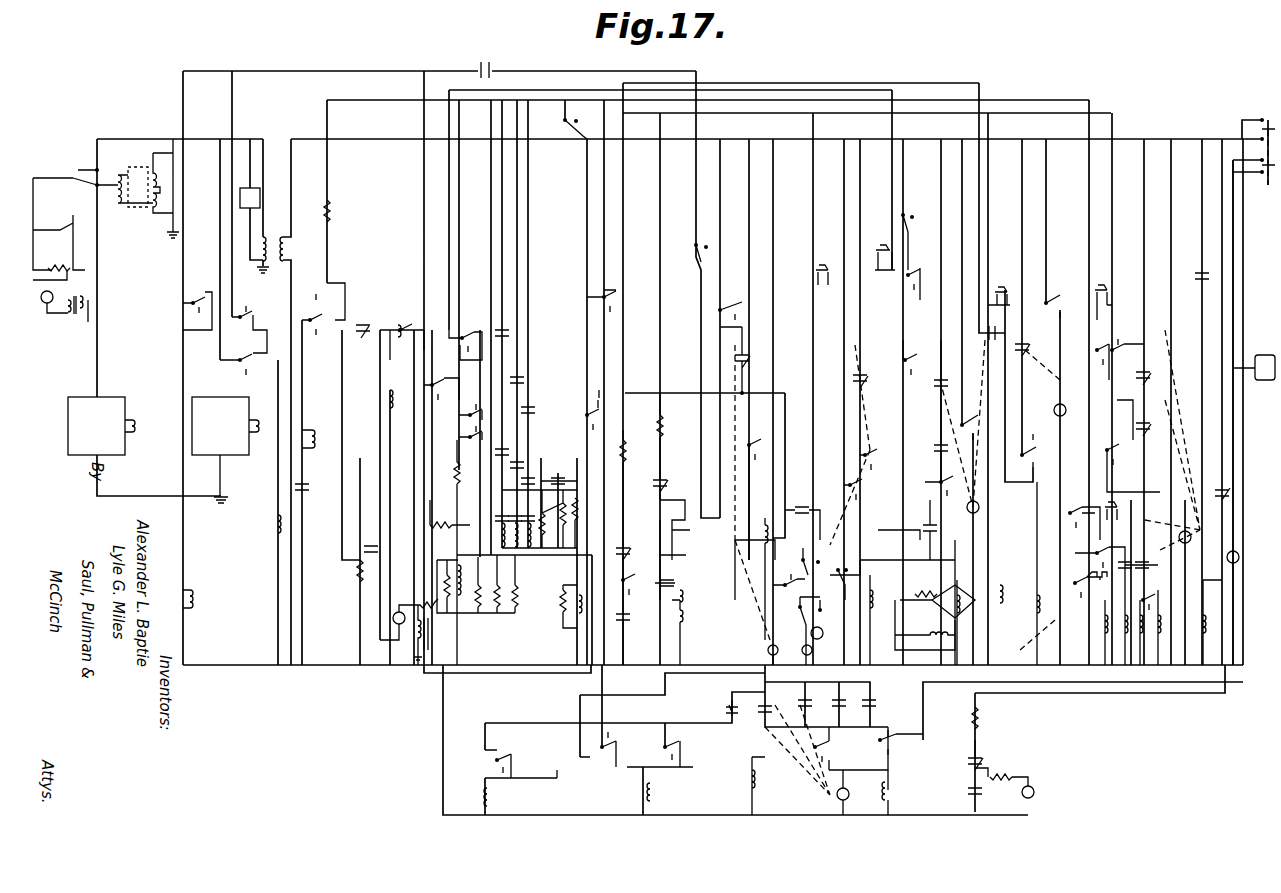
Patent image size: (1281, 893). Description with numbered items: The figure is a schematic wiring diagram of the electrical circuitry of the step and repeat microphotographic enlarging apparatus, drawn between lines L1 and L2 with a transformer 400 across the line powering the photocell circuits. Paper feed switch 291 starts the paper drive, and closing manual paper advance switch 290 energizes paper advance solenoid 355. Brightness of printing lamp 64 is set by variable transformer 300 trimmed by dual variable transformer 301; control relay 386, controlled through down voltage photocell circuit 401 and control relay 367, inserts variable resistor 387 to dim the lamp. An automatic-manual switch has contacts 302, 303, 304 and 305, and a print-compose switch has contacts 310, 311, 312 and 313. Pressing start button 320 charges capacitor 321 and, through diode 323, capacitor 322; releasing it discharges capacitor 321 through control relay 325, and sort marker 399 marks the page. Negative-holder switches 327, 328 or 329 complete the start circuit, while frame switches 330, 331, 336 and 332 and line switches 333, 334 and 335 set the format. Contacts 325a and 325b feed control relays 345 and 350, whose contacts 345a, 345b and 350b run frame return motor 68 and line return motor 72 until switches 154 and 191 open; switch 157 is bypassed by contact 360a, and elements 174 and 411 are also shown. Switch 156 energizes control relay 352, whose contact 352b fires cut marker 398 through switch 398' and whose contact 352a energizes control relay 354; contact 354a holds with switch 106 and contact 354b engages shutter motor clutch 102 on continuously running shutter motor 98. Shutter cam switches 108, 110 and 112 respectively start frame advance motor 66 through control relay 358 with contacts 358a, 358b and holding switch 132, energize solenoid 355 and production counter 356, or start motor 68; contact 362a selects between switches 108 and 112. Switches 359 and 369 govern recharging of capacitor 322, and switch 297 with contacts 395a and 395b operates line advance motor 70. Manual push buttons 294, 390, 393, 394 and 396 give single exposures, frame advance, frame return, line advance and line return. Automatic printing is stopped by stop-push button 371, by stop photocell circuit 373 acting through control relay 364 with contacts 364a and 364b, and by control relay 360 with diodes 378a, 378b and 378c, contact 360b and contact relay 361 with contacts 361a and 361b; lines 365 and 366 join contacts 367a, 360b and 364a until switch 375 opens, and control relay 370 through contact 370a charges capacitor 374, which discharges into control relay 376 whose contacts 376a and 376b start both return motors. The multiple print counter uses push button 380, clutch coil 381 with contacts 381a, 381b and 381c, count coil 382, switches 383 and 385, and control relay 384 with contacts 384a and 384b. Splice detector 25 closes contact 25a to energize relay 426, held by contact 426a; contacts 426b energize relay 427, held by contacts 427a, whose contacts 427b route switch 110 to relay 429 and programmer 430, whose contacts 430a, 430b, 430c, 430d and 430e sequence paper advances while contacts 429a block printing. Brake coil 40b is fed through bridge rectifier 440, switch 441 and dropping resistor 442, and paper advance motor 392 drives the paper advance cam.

The variable transformer 300 is at (110, 185).
The dual variable transformer 301 is at (143, 170).
The print-compose switch contact 313 is at (59, 229).
The variable resistor 387 is at (74, 283).
The printing lamp 64 is at (53, 297).
The contact 367a is at (196, 308).
The line 365 is at (183, 262).
The line 366 is at (233, 282).
The contact 361b is at (255, 317).
The contact 364a is at (243, 370).
The transformer 400 is at (275, 240).
The contact 370a is at (308, 305).
The contact 384b is at (412, 325).
The start button 320 is at (360, 333).
The normally closed contact 325a is at (462, 334).
The switch 327 is at (505, 330).
The contact 360b is at (600, 295).
The automatic-manual switch contact 302 is at (575, 137).
The switch 375 is at (480, 65).
The control relay 376 is at (319, 426).
The capacitor 374 is at (300, 483).
The capacitor 321 is at (364, 540).
The diode 323 is at (357, 575).
The control relay 325 is at (395, 400).
The sort marker 399 is at (390, 612).
The contact 364b is at (432, 380).
The contact 360a is at (468, 417).
The stop-push button 371 is at (468, 440).
The diode 378a is at (447, 470).
The diode 378b is at (663, 414).
The switch 328 is at (522, 380).
The switch 329 is at (530, 410).
The switch 330 is at (505, 450).
The switch 331 is at (522, 465).
The switch 332 is at (535, 480).
The switch 336 is at (556, 483).
The contact 352b is at (587, 417).
The switch 333 is at (506, 548).
The switch 334 is at (518, 548).
The switch 335 is at (531, 546).
The control relay 360 is at (462, 612).
The resistor 378c is at (641, 450).
The manual exposure push button 294 is at (666, 480).
The switch 359 is at (626, 545).
The switch 156 is at (672, 550).
The automatic-manual switch contact 303 is at (640, 586).
The switch 369 is at (657, 594).
The capacitor 322 is at (630, 617).
The contact relay 361 is at (623, 634).
The control relay 352 is at (683, 600).
The contact 354b is at (780, 580).
The control relay 354 is at (762, 538).
The contact 354a is at (754, 499).
The switch 106 is at (742, 352).
The automatic-manual switch contact 304 is at (696, 260).
The contact 352a is at (725, 305).
The push button 390 is at (822, 280).
The push button 393 is at (876, 272).
The automatic-manual switch contact 305 is at (915, 234).
The contact 361a is at (917, 288).
The contact 376b is at (907, 355).
The switch 132 is at (862, 370).
The contact 358b is at (870, 452).
The contact 358a is at (849, 493).
The switch 157 is at (946, 378).
The switch 154 is at (930, 445).
The contact 345a is at (932, 488).
The switch 297 is at (988, 336).
The contact 345b is at (978, 410).
The frame return motor 68 is at (979, 510).
The push button 394 is at (1000, 288).
The contact 395b is at (1058, 292).
The rectifier 174 is at (1036, 340).
The line advance motor 70 is at (1053, 412).
The contact 395a is at (1013, 467).
The contacts 381c is at (1072, 516).
The contact 381a is at (1097, 553).
The contact 381b is at (1075, 586).
The bridge rectifier 440 is at (960, 592).
The control relay 358 is at (962, 615).
The control relay 345 is at (1034, 620).
The contact 325b is at (1107, 455).
The multiple print counter push button 380 is at (1116, 504).
The count coil 382 is at (1105, 612).
The clutch coil 381 is at (1123, 633).
The control relay 384 is at (1126, 663).
The switch 383 is at (1142, 568).
The switch 385 is at (1150, 580).
The contact 384a is at (1164, 601).
The control relay 350 is at (1200, 635).
The production counter 356 is at (1197, 663).
The line return motor 72 is at (1195, 531).
The rectifier 411 is at (1148, 425).
The switch 191 is at (1146, 376).
The contact 350b is at (1149, 344).
The push button 396 is at (1113, 305).
The contact 376a is at (1117, 351).
The switch 110 is at (1200, 270).
The paper feed switch 291 is at (1262, 152).
The supply line L1 is at (1261, 108).
The splice detector 25 is at (1262, 380).
The manual paper advance switch 290 is at (1222, 488).
The paper advance motor 392 is at (1236, 550).
The contact 362a is at (805, 523).
The switch 108 is at (815, 554).
The print-compose switch contact 311 is at (786, 573).
The print-compose switch contact 312 is at (850, 580).
The switch 112 is at (815, 629).
The print-compose switch contact 310 is at (827, 631).
The shutter motor clutch 102 is at (821, 647).
The shutter motor 98 is at (767, 650).
The frame advance motor 66 is at (899, 536).
The switch 441 is at (930, 535).
The dropping resistor 442 is at (934, 610).
The brake coil 40b is at (924, 627).
The contacts 430a is at (728, 698).
The contacts 430b is at (783, 698).
The contacts 430c is at (819, 695).
The contacts 430d is at (845, 698).
The capacitor 430e is at (872, 700).
The contacts 427b is at (904, 722).
The contacts 429a is at (832, 744).
The relay 429 is at (890, 790).
The programmer 430 is at (836, 796).
The paper advance solenoid 355 is at (760, 775).
The contact 426a is at (505, 757).
The contacts 426b is at (600, 753).
The contacts 427a is at (682, 748).
The relay 426 is at (494, 797).
The contact 25a is at (560, 780).
The relay 427 is at (655, 800).
The switch 398' is at (1000, 750).
The cut marker 398 is at (1019, 777).
The supply line L2 is at (1256, 672).
The down voltage photocell circuit 401 is at (96, 426).
The control relay 367 is at (134, 420).
The stop photocell circuit 373 is at (220, 450).
The control relay 364 is at (260, 432).
The control relay 370 is at (275, 530).
The control relay 386 is at (195, 600).